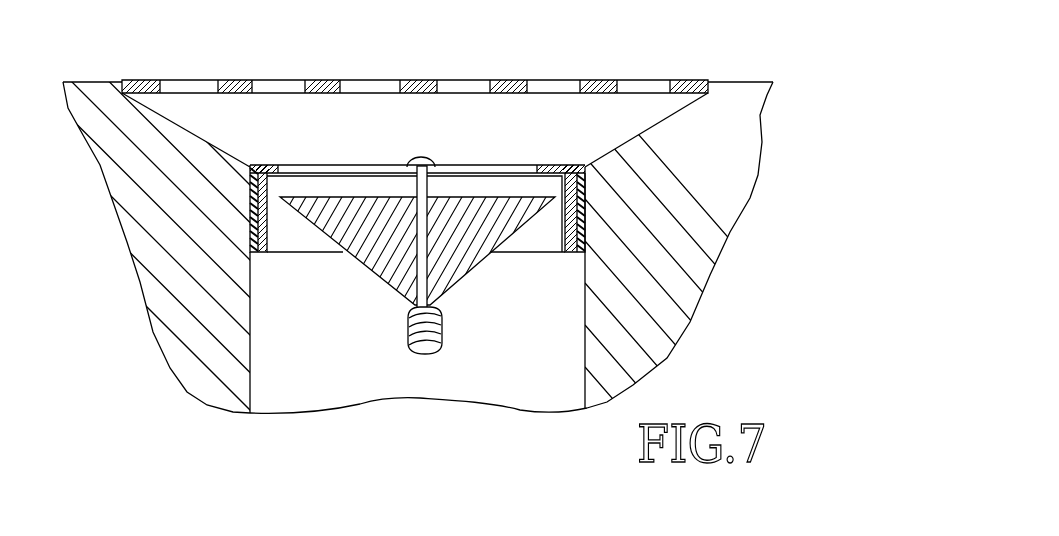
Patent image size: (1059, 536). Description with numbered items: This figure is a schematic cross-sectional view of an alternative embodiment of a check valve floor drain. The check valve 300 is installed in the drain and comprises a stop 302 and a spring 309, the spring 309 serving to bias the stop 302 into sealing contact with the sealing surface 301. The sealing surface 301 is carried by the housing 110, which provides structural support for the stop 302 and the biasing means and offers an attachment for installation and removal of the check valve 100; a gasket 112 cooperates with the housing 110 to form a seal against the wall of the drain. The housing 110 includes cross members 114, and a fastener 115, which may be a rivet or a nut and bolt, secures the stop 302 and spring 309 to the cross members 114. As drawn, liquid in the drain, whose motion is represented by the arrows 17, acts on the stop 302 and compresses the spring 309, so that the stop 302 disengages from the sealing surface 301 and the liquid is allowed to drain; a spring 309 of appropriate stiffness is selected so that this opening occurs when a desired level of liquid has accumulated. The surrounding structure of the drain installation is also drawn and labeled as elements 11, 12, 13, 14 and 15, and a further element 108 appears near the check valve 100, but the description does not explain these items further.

The vault sidewall 11 is at (177, 125).
The vault floor 12 is at (555, 390).
The ground surface 13 is at (690, 80).
The opening 14 is at (581, 154).
The vault chamber 15 is at (365, 374).
The arrows 17 is at (357, 124).
The check valve 100 is at (441, 126).
The gap 108 is at (404, 141).
The housing 110 is at (561, 255).
The gasket 112 is at (248, 228).
The cross members 114 is at (502, 167).
The fastener 115 is at (419, 356).
The check valve 300 is at (604, 69).
The sealing surface 301 is at (276, 178).
The stop 302 is at (376, 266).
The spring 309 is at (443, 333).